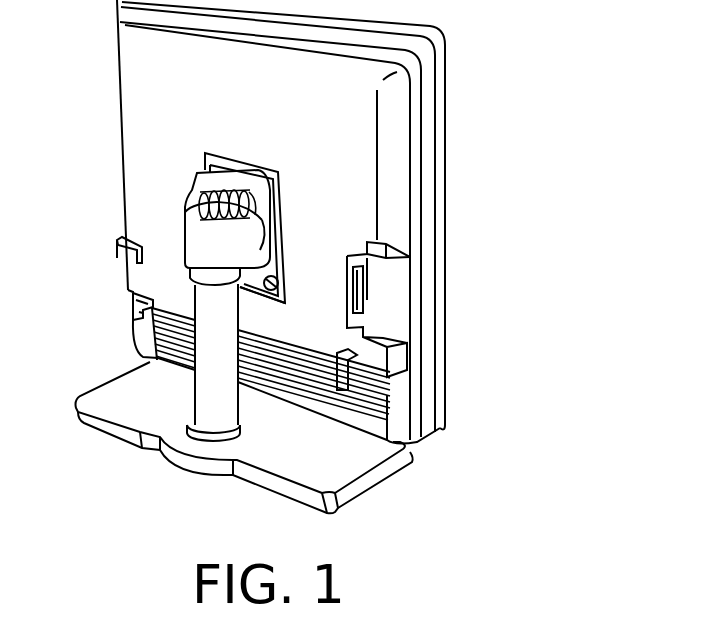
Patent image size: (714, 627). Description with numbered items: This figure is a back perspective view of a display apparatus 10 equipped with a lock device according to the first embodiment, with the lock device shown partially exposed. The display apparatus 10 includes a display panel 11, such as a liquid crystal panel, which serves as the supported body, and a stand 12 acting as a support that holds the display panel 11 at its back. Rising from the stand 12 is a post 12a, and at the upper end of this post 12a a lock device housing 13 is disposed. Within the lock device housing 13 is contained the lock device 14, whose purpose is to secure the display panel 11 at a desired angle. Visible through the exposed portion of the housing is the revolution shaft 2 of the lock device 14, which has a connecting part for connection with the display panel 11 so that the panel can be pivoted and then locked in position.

The display apparatus 10 is at (462, 64).
The display panel 11 is at (446, 285).
The revolution shaft 2 is at (272, 212).
The lock device housing 13 is at (183, 235).
The lock device 14 is at (196, 200).
The stand 12 is at (396, 490).
The post 12a is at (200, 393).